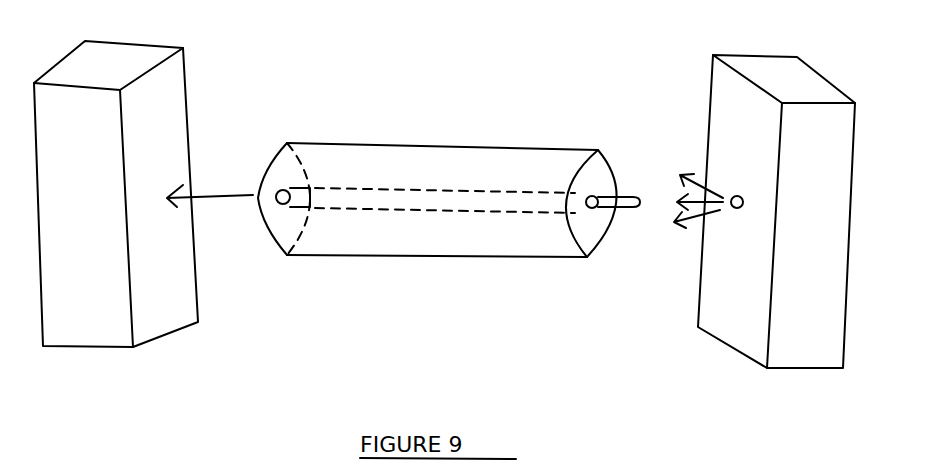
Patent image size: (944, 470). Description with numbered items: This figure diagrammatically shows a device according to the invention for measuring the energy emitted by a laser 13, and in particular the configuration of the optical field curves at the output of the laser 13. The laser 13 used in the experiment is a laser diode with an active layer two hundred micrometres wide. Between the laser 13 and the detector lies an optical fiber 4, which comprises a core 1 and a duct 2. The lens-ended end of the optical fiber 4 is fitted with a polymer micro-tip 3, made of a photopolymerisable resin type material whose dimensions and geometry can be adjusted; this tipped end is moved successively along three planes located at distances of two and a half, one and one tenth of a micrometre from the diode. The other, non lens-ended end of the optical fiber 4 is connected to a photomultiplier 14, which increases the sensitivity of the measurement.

The core 1 is at (390, 198).
The duct 2 is at (493, 235).
The polymer micro-tip 3 is at (623, 210).
The optical fiber 4 is at (600, 173).
The laser 13 is at (777, 80).
The photomultiplier 14 is at (90, 319).